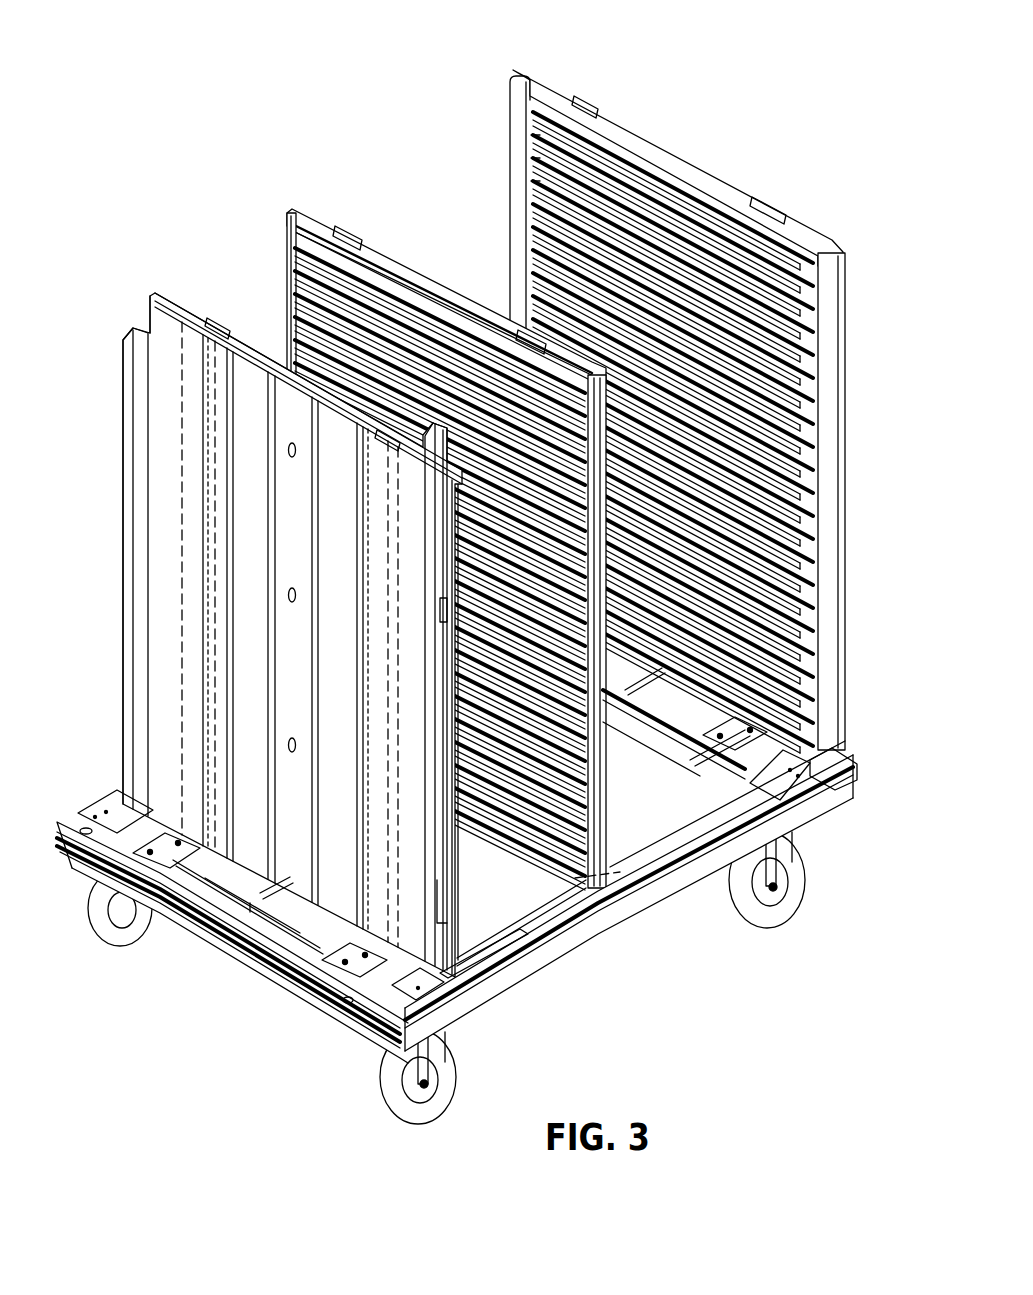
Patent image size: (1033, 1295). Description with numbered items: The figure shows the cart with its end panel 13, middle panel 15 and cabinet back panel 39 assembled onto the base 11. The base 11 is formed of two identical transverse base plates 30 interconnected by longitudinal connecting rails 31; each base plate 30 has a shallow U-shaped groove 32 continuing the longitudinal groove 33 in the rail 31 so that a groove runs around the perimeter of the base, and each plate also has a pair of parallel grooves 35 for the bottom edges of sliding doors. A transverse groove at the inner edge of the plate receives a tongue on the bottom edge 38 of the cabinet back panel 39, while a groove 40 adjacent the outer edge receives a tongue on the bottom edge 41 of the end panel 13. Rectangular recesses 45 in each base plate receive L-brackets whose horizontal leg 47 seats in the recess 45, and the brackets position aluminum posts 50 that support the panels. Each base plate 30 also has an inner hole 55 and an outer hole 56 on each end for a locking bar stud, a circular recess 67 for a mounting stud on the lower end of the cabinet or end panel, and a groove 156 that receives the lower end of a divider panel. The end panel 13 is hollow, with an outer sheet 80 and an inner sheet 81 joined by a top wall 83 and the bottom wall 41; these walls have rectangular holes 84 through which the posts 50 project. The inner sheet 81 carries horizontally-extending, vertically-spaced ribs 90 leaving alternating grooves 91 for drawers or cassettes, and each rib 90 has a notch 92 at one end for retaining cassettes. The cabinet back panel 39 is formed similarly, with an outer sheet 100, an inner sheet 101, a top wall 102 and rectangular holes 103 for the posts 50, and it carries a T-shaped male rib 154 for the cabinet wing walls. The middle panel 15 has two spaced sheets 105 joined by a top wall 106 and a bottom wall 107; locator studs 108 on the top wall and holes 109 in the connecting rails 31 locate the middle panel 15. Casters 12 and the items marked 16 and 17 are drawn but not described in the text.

The base 11 is at (450, 649).
The casters 12 is at (98, 913).
The end panel 13 is at (652, 384).
The middle panel 15 is at (446, 568).
The front panel assembly 16 is at (291, 582).
The panel assembly 17 is at (566, 490).
The base plate 30 is at (213, 947).
The connecting rail 31 is at (553, 951).
The U-shaped groove 32 is at (260, 970).
The longitudinal groove 33 is at (592, 924).
The parallel grooves 35 is at (185, 910).
The bottom edge 38 is at (235, 850).
The cabinet back panel 39 is at (118, 470).
The groove 40 is at (252, 898).
The bottom edge 41 is at (637, 673).
The rectangular recess 45 is at (188, 828).
The horizontal leg 47 is at (743, 768).
The post 50 is at (180, 522).
The inner hole 55 is at (525, 985).
The outer hole 56 is at (110, 810).
The circular recess 67 is at (82, 828).
The outer sheet 80 is at (572, 76).
The inner sheet 81 is at (635, 175).
The top wall 83 is at (714, 185).
The rectangular hole 84 is at (590, 104).
The rib 90 is at (530, 147).
The groove 91 is at (530, 172).
The notch 92 is at (530, 124).
The outer sheet 100 is at (291, 619).
The inner sheet 101 is at (460, 858).
The top wall 102 is at (177, 297).
The rectangular hole 103 is at (218, 330).
The sheet 105 is at (330, 212).
The top wall 106 is at (430, 290).
The bottom wall 107 is at (552, 886).
The locator stud 108 is at (360, 235).
The hole 109 is at (658, 882).
The T-shaped male rib 154 is at (440, 600).
The groove 156 is at (270, 886).